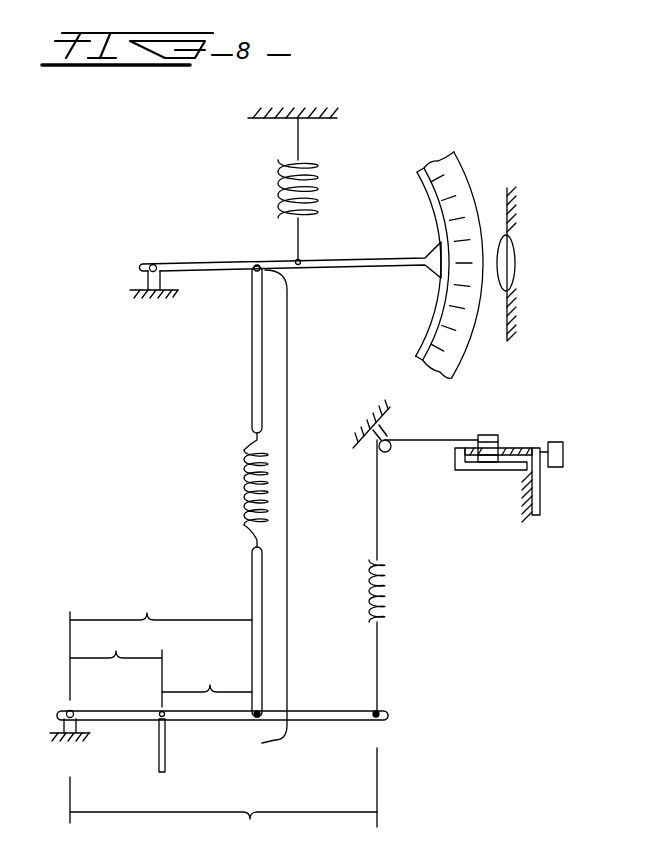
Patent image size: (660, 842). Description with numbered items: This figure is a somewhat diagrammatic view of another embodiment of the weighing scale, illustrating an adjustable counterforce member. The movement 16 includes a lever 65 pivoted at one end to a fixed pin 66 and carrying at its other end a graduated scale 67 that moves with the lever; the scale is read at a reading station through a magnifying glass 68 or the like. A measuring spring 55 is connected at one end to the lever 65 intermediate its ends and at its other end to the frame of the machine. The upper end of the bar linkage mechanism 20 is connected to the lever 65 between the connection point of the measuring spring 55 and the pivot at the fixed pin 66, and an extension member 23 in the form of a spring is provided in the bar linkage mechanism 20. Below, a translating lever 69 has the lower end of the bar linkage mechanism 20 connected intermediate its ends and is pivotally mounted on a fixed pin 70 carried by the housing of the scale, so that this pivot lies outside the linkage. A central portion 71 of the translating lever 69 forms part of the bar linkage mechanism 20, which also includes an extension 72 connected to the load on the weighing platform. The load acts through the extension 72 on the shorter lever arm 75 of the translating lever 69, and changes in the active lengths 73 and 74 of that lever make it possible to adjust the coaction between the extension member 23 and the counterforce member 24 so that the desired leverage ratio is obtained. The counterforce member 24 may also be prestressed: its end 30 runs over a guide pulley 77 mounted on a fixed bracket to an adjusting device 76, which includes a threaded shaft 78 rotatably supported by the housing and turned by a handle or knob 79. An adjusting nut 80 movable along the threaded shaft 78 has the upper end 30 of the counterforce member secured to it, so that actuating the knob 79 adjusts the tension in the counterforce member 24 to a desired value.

The movement 16 is at (232, 221).
The measuring spring 55 is at (320, 183).
The lever 65 is at (330, 259).
The fixed pin 66 is at (154, 264).
The graduated scale 67 is at (450, 197).
The magnifying glass 68 is at (511, 253).
The bar linkage mechanism 20 is at (287, 474).
The extension member 23 is at (243, 496).
The counterforce member 24 is at (386, 584).
The end of counterforce member 30 is at (378, 508).
The translating lever 69 is at (318, 721).
The fixed pin 70 is at (64, 711).
The central portion 71 is at (207, 675).
The extension 72 is at (166, 748).
The active length 73 is at (161, 641).
The active length 74 is at (223, 795).
The shorter lever arm 75 is at (116, 665).
The adjusting device 76 is at (522, 432).
The guide pulley 77 is at (391, 452).
The threaded shaft 78 is at (516, 446).
The knob 79 is at (563, 452).
The adjusting nut 80 is at (488, 435).